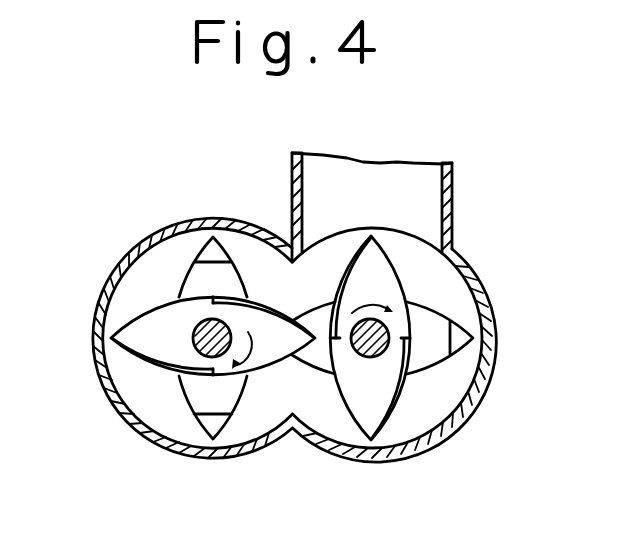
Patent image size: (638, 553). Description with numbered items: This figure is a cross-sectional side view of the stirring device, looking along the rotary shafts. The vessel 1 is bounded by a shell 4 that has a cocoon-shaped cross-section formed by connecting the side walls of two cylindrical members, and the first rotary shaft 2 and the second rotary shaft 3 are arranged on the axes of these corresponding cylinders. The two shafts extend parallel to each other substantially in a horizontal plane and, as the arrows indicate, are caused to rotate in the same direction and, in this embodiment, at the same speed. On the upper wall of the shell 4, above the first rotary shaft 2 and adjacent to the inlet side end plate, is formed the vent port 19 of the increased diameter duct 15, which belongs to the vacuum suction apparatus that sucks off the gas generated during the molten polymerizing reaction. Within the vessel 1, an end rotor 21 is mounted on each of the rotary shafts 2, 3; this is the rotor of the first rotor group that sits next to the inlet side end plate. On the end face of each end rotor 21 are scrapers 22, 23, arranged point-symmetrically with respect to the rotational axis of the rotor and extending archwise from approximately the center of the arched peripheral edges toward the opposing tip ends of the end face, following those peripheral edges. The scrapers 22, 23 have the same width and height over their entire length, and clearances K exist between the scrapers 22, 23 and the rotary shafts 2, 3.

The vessel 1 is at (121, 240).
The first rotary shaft 2 is at (371, 352).
The second rotary shaft 3 is at (200, 333).
The shell 4 is at (197, 220).
The increased diameter duct 15 is at (454, 170).
The vent port 19 is at (383, 222).
The end rotor 21 is at (433, 328).
The scraper 22 is at (348, 272).
The scraper 23 is at (229, 252).
The clearances K is at (212, 308).